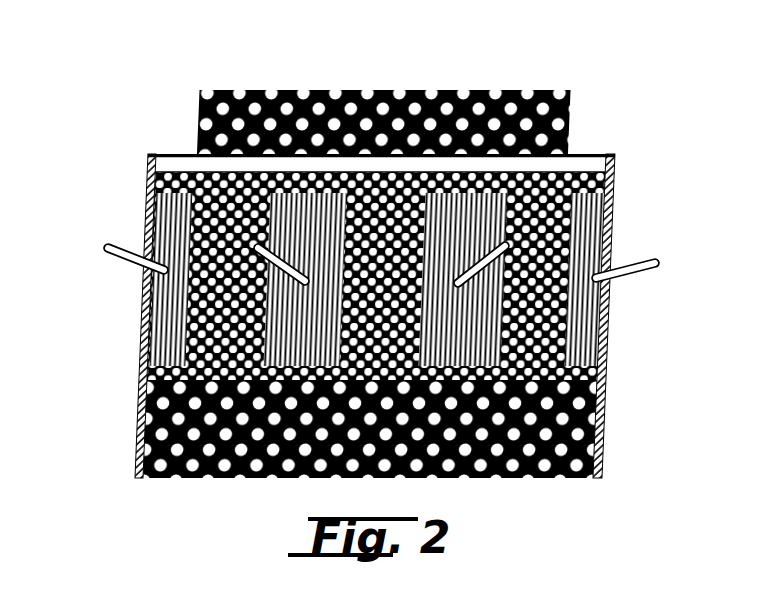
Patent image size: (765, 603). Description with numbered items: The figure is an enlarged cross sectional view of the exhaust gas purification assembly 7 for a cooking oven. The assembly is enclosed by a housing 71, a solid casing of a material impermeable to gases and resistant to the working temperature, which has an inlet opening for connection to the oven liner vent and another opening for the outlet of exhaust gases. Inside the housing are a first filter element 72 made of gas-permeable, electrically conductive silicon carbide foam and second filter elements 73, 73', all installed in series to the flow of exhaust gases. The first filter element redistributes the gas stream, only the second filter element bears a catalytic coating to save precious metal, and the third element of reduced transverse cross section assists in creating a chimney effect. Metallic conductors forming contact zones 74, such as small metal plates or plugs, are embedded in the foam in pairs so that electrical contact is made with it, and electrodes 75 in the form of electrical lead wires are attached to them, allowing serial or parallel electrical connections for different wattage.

The exhaust gas purification assembly 7 is at (360, 255).
The housing of assembly 71 is at (600, 180).
The first filter element 72 is at (537, 303).
The second filter element 73 is at (409, 429).
The second filter element 73' is at (428, 122).
The contact zone 74 is at (163, 329).
The electrode 75 is at (100, 243).